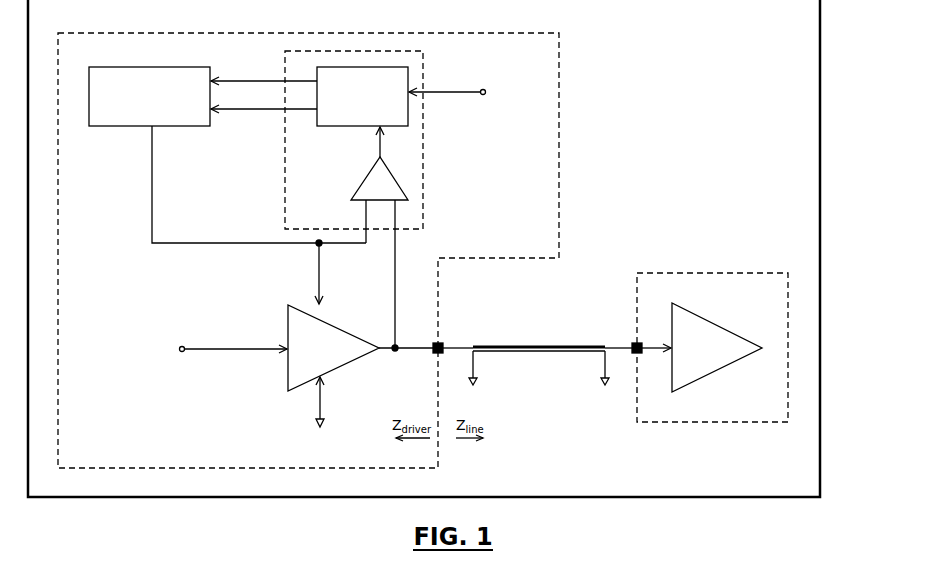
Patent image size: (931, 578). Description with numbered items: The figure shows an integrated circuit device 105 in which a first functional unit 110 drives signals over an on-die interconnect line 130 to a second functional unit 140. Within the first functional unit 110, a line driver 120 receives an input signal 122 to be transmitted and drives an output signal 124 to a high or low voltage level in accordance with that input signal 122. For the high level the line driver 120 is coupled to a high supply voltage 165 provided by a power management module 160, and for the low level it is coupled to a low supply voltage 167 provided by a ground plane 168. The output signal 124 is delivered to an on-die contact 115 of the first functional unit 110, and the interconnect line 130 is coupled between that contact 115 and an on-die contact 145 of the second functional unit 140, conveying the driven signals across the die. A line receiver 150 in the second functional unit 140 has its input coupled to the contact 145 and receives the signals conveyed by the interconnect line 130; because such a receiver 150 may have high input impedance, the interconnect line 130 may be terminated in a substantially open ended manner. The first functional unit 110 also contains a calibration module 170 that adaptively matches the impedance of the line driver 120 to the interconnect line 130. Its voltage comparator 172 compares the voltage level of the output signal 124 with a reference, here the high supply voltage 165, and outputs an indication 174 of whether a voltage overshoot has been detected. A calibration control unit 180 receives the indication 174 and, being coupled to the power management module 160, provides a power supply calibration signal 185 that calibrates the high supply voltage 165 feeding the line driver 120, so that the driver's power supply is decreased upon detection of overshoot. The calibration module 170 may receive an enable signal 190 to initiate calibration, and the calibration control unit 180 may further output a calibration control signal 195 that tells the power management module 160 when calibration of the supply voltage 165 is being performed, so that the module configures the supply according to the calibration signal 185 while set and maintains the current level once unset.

The integrated circuit device 105 is at (730, 498).
The first functional unit 110 is at (559, 206).
The on-die contact 115 is at (445, 344).
The line driver 120 is at (288, 317).
The input signal 122 is at (196, 353).
The output signal 124 is at (414, 347).
The interconnect line 130 is at (560, 353).
The second functional unit 140 is at (742, 272).
The on-die contact 145 is at (633, 344).
The line receiver 150 is at (698, 379).
The power management module 160 is at (118, 127).
The high supply voltage 165 is at (182, 245).
The low supply voltage 167 is at (318, 410).
The ground plane 168 is at (314, 428).
The calibration module 170 is at (285, 203).
The voltage comparator 172 is at (353, 190).
The indication 174 is at (378, 138).
The calibration control unit 180 is at (348, 67).
The power supply calibration signal 185 is at (257, 111).
The enable signal 190 is at (470, 96).
The calibration control signal 195 is at (257, 79).